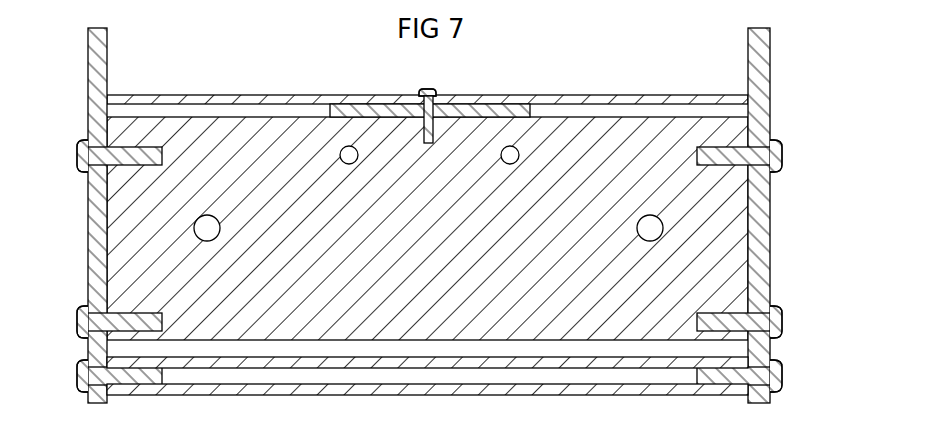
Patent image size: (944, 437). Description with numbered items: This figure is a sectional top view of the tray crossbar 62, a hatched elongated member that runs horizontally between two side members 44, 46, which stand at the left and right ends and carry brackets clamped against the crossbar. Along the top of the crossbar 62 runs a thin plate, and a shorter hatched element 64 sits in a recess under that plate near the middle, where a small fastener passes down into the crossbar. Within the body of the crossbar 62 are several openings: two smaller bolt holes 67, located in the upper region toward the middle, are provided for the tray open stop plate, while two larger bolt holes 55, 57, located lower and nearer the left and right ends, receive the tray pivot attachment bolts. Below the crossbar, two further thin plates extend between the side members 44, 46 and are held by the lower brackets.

The first side post 44 is at (88, 265).
The second side post 46 is at (770, 269).
The bolt hole 55 is at (210, 232).
The bolt hole 57 is at (646, 232).
The tray crossbar 62 is at (263, 130).
The insert 64 is at (490, 110).
The bolt holes 67 is at (352, 158).